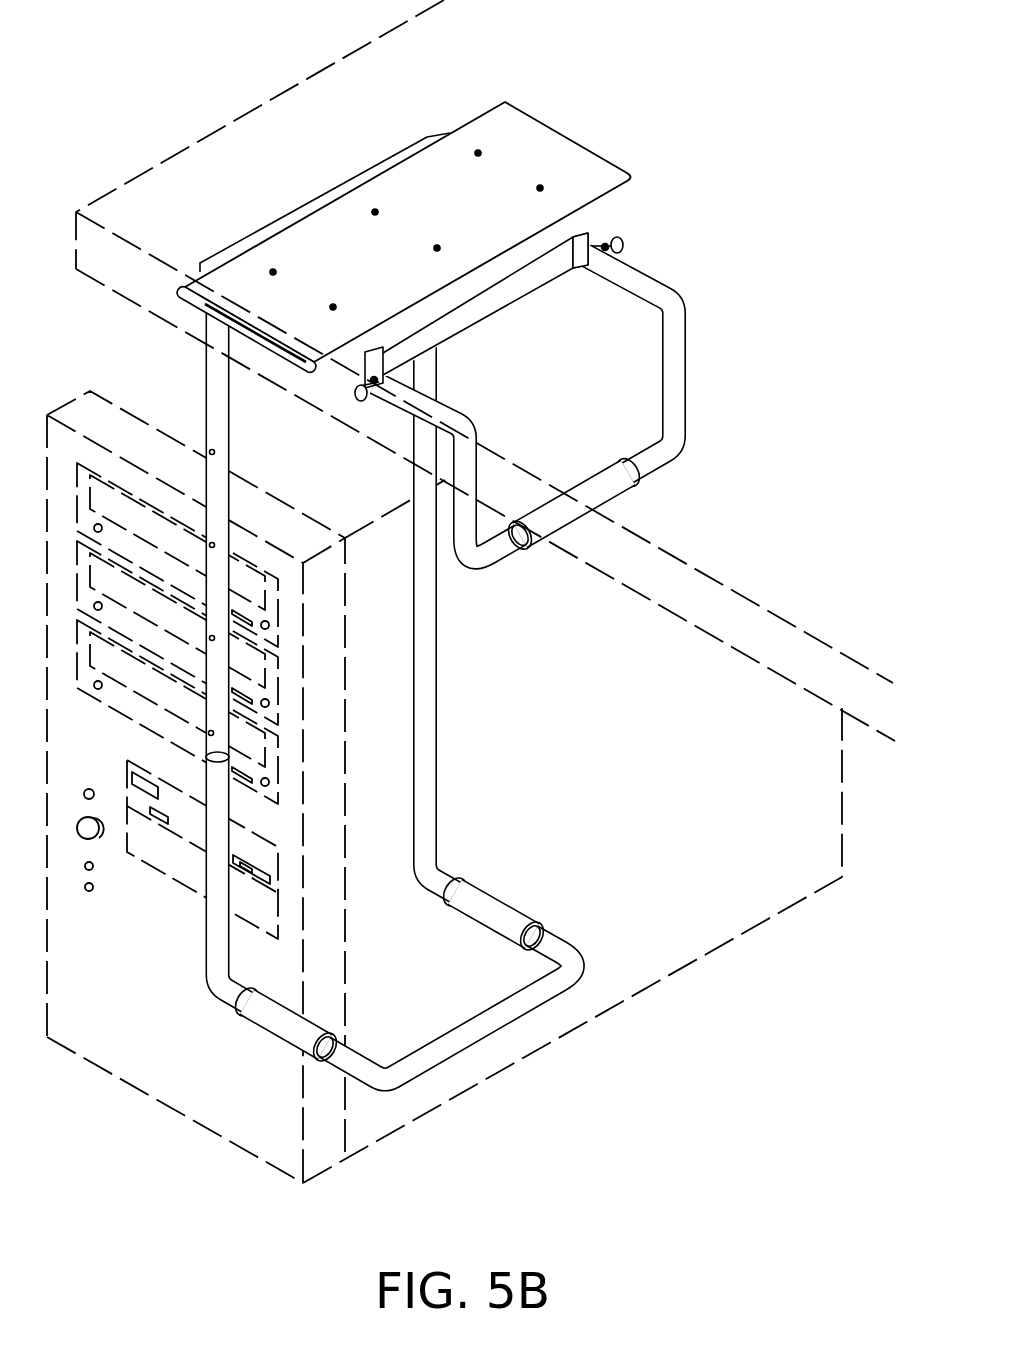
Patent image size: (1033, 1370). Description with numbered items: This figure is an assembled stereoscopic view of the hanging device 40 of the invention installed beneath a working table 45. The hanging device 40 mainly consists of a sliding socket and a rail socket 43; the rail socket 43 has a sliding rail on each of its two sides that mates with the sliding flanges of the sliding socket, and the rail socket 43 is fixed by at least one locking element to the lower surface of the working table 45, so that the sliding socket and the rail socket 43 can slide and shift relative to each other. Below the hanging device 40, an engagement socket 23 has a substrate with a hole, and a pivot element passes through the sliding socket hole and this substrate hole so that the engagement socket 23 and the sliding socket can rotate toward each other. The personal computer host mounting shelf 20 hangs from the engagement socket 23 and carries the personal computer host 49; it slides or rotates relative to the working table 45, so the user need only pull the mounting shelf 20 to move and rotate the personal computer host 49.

The personal computer host mounting shelf 20 is at (594, 234).
The engagement socket 23 is at (470, 288).
The hanging device 40 is at (605, 153).
The rail socket 43 is at (528, 118).
The working table 45 is at (133, 178).
The personal computer host 49 is at (128, 377).